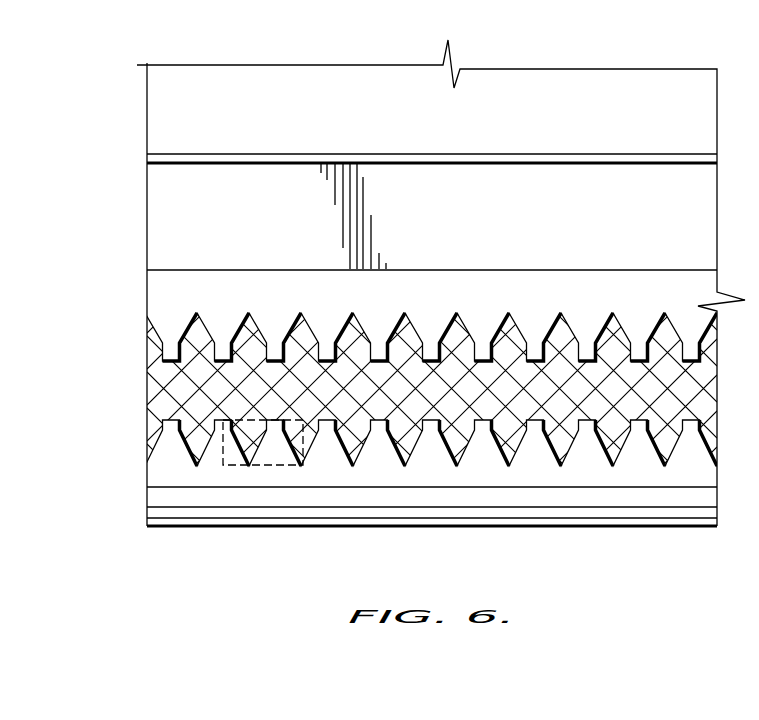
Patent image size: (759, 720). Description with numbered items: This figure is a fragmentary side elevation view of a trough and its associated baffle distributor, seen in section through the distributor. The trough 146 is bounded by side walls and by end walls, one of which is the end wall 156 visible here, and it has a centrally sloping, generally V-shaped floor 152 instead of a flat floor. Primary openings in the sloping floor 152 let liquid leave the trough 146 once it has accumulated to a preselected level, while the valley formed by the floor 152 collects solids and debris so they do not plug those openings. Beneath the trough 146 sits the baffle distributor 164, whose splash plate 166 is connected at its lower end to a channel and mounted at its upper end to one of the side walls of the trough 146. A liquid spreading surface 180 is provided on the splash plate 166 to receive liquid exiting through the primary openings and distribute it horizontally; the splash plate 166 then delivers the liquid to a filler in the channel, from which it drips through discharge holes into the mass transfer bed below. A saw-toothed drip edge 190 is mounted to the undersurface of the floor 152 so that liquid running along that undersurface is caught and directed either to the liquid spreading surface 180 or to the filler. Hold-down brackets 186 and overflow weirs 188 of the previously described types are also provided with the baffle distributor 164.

The floor 152 is at (302, 75).
The end wall 156 is at (147, 115).
The trough 146 is at (147, 218).
The saw-toothed drip edge 190 is at (163, 287).
The baffle distributor 164 is at (147, 368).
The liquid spreading surface 180 is at (160, 403).
The splash plate 166 is at (150, 423).
The overflow weir 188 is at (173, 452).
The hold-down bracket 186 is at (310, 452).